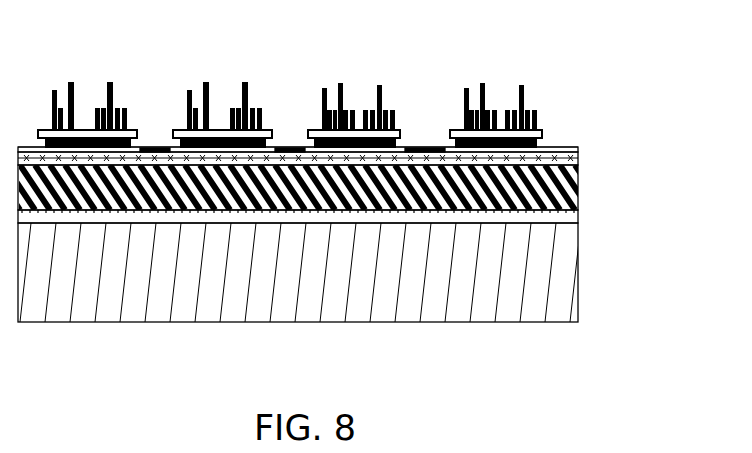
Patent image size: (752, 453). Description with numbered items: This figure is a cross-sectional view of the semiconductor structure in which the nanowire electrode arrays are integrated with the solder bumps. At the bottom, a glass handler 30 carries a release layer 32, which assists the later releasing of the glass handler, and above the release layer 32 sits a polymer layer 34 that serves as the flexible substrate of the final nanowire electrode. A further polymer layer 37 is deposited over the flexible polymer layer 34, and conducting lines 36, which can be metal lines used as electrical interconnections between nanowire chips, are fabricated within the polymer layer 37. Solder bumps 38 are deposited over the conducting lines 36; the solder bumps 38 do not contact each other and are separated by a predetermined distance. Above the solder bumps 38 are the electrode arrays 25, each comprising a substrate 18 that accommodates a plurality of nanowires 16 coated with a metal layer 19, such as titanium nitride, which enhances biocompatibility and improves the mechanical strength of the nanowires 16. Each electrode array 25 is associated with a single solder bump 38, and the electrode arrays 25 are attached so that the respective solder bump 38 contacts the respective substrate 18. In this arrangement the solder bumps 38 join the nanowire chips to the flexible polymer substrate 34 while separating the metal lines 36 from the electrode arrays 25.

The nanowires 16 is at (386, 84).
The substrate 18 is at (403, 133).
The metal layer 19 is at (379, 83).
The electrode array 25 is at (647, 35).
The glass handler 30 is at (580, 258).
The release layer 32 is at (580, 215).
The polymer layer 34 is at (580, 168).
The conducting lines 36 is at (552, 148).
The polymer layer 37 is at (580, 150).
The solder bumps 38 is at (306, 147).